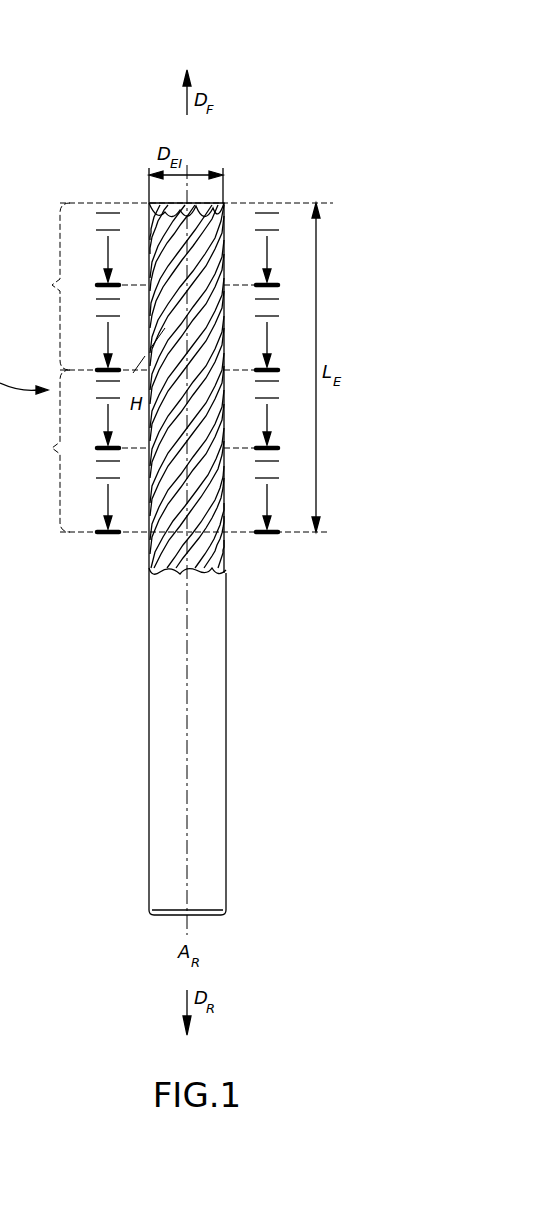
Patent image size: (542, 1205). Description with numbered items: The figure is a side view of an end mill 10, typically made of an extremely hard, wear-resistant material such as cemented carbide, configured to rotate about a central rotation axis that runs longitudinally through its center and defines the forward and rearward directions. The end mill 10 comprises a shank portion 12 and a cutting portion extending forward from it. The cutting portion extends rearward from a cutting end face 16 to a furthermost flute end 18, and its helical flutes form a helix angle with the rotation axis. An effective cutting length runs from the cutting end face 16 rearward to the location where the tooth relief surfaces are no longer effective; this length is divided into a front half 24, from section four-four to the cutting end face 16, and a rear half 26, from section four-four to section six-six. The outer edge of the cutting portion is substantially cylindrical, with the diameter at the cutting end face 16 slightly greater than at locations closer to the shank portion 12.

The end mill 10 is at (258, 118).
The shank portion 12 is at (122, 742).
The cutting end face 16 is at (153, 156).
The furthermost flute end 18 is at (218, 582).
The front half 24 is at (147, 286).
The rear half 26 is at (147, 451).